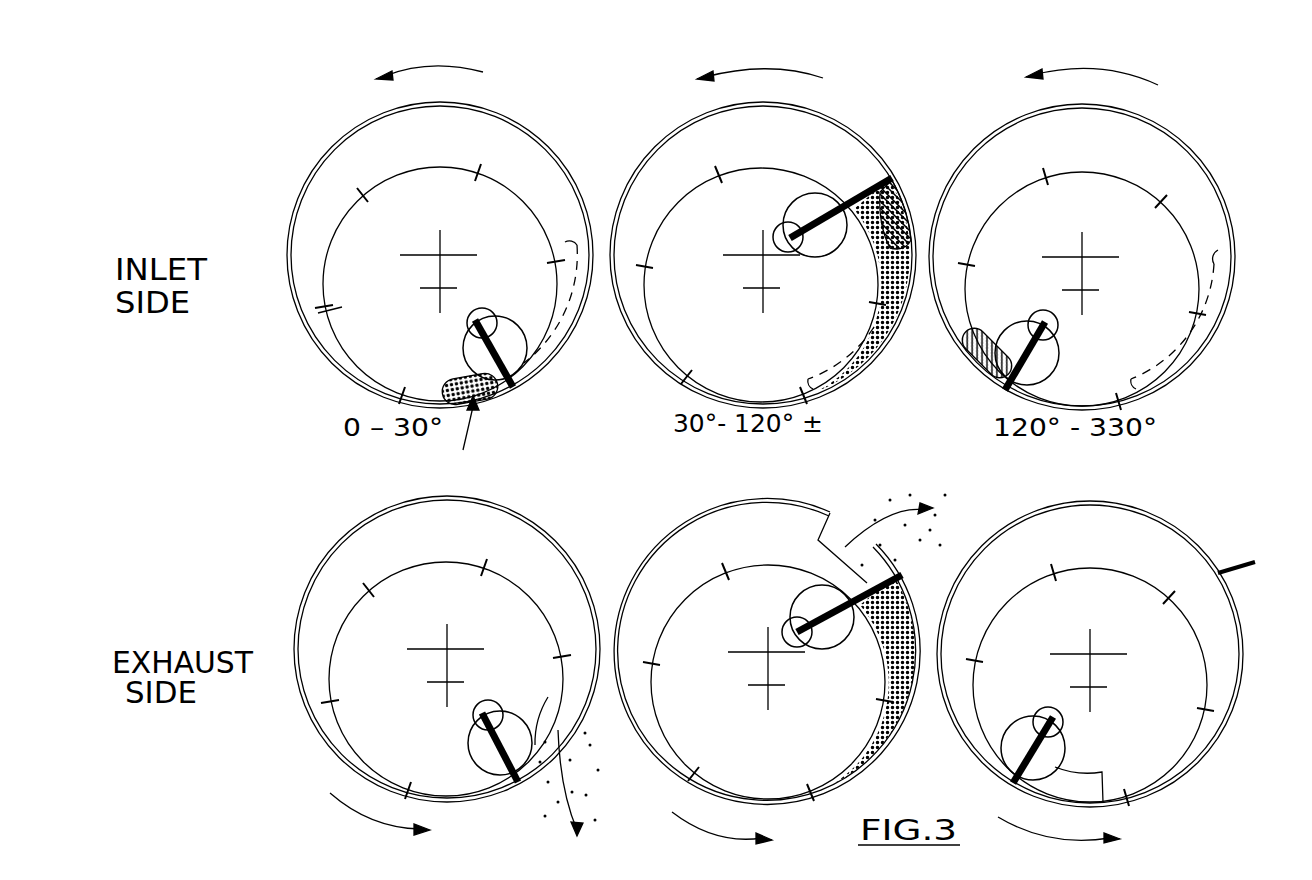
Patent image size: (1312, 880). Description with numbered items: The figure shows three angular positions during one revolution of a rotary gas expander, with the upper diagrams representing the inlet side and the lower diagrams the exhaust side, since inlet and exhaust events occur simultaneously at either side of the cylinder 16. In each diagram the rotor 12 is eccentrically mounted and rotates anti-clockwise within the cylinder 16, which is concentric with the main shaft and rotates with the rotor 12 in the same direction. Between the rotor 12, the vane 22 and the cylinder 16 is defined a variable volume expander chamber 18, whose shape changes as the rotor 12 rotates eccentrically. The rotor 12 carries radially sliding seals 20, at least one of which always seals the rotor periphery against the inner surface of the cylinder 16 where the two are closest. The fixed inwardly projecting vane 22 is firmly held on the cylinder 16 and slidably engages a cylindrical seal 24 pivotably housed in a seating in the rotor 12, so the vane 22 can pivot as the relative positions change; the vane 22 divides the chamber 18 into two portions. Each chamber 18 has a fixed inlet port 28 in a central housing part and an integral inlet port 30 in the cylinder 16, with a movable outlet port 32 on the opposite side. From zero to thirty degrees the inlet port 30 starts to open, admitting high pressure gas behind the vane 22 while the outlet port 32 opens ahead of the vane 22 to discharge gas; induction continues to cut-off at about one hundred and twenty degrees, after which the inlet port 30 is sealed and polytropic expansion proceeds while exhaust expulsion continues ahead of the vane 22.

The rotor 12 is at (363, 213).
The cylinder 16 is at (560, 160).
The variable volume expander chamber 18 is at (482, 133).
The radially sliding seals 20 is at (312, 325).
The vane 22 is at (463, 348).
The cylindrical seal 24 is at (503, 340).
The fixed inlet port 28 is at (545, 370).
The integral inlet port 30 is at (895, 197).
The movable outlet port 32 is at (548, 697).